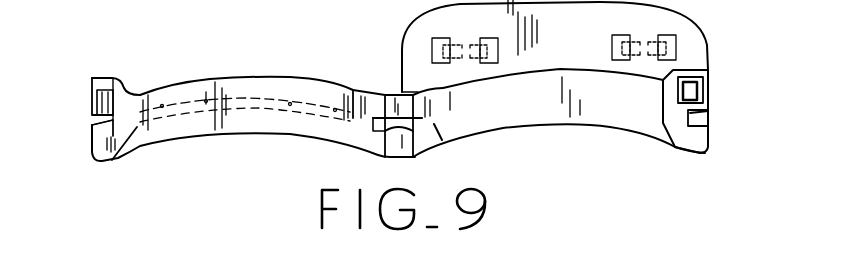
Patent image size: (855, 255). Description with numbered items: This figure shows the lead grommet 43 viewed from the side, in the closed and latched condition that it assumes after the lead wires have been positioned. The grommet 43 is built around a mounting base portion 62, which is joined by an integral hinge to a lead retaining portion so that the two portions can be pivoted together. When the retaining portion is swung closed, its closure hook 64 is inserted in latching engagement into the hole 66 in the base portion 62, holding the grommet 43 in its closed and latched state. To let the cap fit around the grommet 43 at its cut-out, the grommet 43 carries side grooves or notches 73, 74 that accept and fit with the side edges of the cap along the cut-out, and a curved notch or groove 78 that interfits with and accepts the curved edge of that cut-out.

The lead grommet 43 is at (386, 63).
The mounting base portion 62 is at (708, 150).
The closure hook 64 is at (96, 93).
The hole 66 is at (702, 88).
The side notch 73 is at (97, 140).
The side notch 74 is at (434, 126).
The curved notch 78 is at (260, 103).